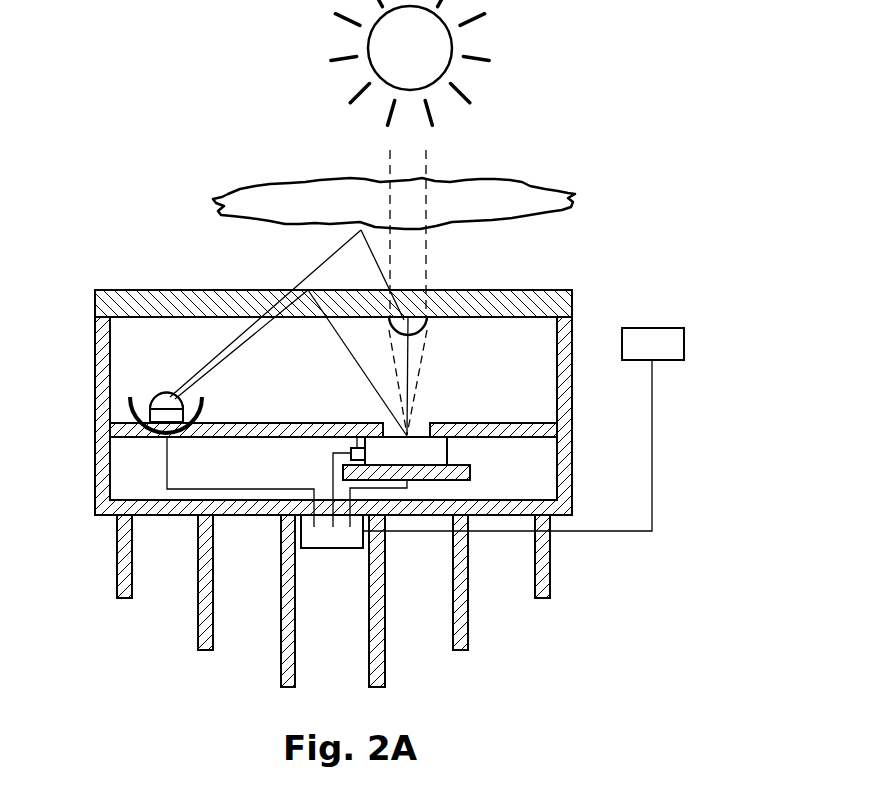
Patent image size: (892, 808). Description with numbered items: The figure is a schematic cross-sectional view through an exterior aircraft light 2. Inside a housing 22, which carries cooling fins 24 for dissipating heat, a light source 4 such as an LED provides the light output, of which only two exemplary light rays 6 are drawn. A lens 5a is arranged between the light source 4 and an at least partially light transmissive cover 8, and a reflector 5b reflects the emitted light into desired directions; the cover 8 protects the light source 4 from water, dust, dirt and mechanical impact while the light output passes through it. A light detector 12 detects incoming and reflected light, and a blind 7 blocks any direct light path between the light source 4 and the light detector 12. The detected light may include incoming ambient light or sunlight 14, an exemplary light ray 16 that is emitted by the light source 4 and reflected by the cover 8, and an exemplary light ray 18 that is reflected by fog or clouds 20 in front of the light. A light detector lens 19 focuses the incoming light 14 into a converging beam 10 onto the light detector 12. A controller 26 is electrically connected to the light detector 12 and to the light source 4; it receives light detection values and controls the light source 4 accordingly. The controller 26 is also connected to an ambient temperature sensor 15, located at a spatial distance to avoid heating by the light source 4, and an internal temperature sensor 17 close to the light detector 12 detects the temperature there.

The exterior aircraft light 2 is at (593, 302).
The light source 4 is at (162, 393).
The lens 5a is at (192, 388).
The reflector 5b is at (130, 413).
The exemplary light rays 6 is at (292, 290).
The blind 7 is at (316, 422).
The at least partially light transmissive cover 8 is at (160, 303).
The converging beam 10 is at (432, 375).
The light detector 12 is at (437, 452).
The incoming light (ambient light, sunlight) 14 is at (388, 165).
The ambient temperature sensor 15 is at (684, 346).
The light ray reflected by the cover 16 is at (347, 349).
The internal temperature sensor 17 is at (356, 446).
The light ray reflected by fog or clouds 18 is at (377, 258).
The light detector lens 19 is at (417, 325).
The fog or clouds 20 is at (584, 185).
The housing 22 is at (76, 456).
The cooling fins 24 is at (173, 626).
The controller 26 is at (333, 548).